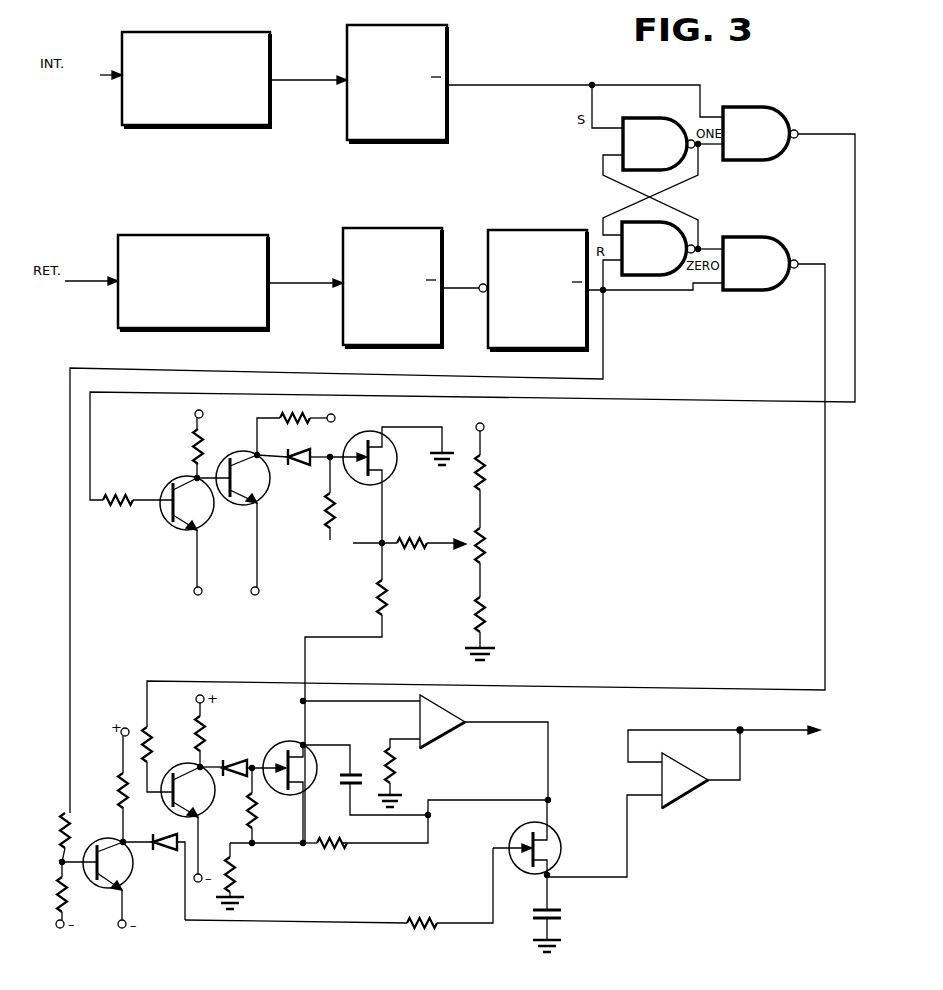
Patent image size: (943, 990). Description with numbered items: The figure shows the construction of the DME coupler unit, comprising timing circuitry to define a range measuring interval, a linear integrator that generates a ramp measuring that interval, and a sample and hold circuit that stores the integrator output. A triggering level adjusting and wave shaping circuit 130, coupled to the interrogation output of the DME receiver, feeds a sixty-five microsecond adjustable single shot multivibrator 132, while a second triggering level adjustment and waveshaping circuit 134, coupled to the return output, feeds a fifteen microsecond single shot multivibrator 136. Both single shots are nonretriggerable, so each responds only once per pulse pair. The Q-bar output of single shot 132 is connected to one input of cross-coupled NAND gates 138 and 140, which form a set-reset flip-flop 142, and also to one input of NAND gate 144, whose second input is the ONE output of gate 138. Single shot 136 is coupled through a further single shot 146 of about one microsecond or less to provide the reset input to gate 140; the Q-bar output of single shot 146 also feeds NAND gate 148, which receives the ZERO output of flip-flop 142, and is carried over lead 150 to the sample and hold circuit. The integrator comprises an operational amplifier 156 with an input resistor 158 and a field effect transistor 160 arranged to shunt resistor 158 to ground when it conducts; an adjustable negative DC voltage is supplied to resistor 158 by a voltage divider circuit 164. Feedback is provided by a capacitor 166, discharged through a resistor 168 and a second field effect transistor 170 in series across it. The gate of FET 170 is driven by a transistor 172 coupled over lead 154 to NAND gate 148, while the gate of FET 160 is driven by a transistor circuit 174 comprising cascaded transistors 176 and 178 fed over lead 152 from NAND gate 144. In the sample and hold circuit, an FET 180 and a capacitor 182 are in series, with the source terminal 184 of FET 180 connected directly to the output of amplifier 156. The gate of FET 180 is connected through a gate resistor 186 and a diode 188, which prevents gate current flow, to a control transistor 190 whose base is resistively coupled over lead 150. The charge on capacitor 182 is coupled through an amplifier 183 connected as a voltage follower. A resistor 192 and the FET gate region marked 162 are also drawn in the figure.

The triggering level adjusting and wave shaping circuit 130 is at (232, 126).
The 65 microsecond adjustable single shot multivibrator 132 is at (430, 142).
The second triggering level adjustment and waveshaping circuit 134 is at (238, 235).
The 15 microsecond single shot multivibrator 136 is at (428, 228).
The NAND gate 138 is at (652, 116).
The NAND gate 140 is at (648, 277).
The set-reset flip-flop 142 is at (688, 198).
The NAND gate 144 is at (783, 110).
The single shot 146 is at (535, 230).
The NAND gate 148 is at (771, 291).
The lead 150 is at (603, 355).
The lead 152 is at (838, 141).
The lead 154 is at (822, 372).
The operational amplifier 156 is at (455, 732).
The resistor 158 is at (390, 597).
The field effect transistor 160 is at (391, 472).
The gate terminal of field effect transistor 162 is at (350, 480).
The voltage divider circuit 164 is at (467, 533).
The capacitor 166 is at (340, 790).
The resistor 168 is at (340, 848).
The second field effect transistor 170 is at (278, 738).
The transistor 172 is at (206, 812).
The transistor circuit 174 is at (225, 522).
The transistor 176 is at (169, 476).
The transistor 178 is at (266, 490).
The FET 180 is at (563, 838).
The capacitor 182 is at (560, 918).
The amplifier 183 is at (690, 796).
The source terminal 184 is at (545, 796).
The gate resistor 186 is at (437, 914).
The diode 188 is at (168, 858).
The control transistor 190 is at (126, 888).
The resistor 192 is at (322, 506).